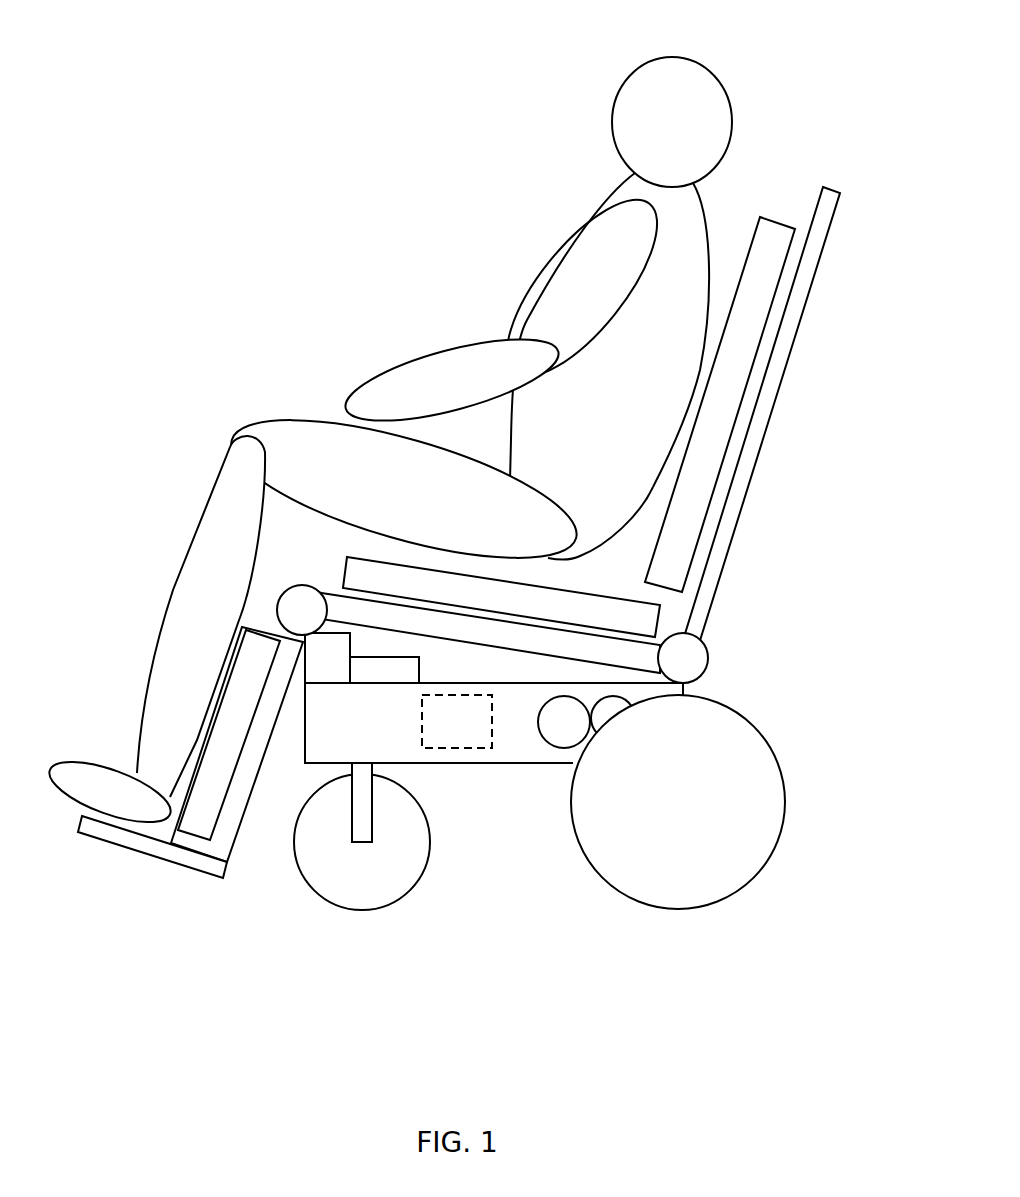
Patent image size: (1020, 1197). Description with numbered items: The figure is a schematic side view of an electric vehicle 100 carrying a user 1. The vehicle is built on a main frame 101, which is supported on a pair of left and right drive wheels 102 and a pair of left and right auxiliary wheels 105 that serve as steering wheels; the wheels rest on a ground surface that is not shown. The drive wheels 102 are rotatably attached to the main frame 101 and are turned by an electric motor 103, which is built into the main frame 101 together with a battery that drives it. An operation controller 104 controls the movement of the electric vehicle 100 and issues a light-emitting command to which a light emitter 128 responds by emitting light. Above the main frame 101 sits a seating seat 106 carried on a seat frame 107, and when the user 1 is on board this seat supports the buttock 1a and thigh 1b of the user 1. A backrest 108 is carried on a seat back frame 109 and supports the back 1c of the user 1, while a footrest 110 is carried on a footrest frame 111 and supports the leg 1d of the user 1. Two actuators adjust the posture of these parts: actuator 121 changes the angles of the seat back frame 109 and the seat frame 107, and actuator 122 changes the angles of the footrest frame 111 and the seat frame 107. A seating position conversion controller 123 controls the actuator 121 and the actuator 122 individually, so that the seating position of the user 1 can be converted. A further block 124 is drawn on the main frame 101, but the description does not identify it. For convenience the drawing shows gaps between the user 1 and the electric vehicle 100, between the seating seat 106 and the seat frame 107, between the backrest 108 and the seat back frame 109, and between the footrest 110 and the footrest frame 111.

The electric vehicle 100 is at (157, 35).
The user 1 is at (753, 47).
The buttock 1a is at (597, 527).
The thigh 1b is at (287, 484).
The back 1c is at (700, 228).
The leg 1d is at (170, 663).
The main frame 101 is at (503, 752).
The drive wheel 102 is at (675, 880).
The electric motor 103 is at (568, 737).
The operation controller 104 is at (615, 703).
The auxiliary wheel 105 is at (365, 887).
The seating seat 106 is at (645, 613).
The seat frame 107 is at (643, 654).
The backrest 108 is at (770, 230).
The seat back frame 109 is at (832, 193).
The footrest 110 is at (195, 823).
The footrest frame 111 is at (110, 833).
The actuator 121 is at (693, 657).
The actuator 122 is at (297, 610).
The seating position conversion controller 123 is at (453, 750).
The drive unit 124 is at (313, 670).
The light emitter 128 is at (386, 673).